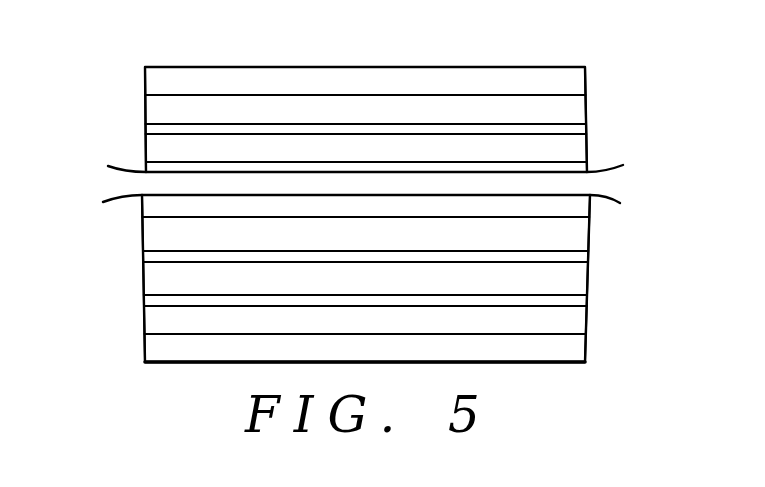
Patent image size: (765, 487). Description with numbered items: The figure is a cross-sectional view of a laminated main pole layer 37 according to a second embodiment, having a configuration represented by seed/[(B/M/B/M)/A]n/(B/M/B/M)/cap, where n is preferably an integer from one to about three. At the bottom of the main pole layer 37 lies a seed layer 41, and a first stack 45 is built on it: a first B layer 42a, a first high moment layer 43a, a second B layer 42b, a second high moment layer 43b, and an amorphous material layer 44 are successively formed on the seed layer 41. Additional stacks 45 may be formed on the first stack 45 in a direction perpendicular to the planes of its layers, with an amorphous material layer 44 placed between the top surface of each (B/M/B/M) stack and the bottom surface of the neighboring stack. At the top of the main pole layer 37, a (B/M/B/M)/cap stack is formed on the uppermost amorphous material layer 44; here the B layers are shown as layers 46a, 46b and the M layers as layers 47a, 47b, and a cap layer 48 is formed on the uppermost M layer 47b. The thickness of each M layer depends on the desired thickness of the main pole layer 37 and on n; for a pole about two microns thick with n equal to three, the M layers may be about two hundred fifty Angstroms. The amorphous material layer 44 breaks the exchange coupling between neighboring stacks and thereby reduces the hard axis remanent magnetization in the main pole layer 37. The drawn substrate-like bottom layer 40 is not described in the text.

The laminated main pole layer 37 is at (361, 101).
The cap layer 48 is at (565, 80).
The M layer 47b is at (565, 108).
The B layer 46b is at (164, 124).
The M layer 47a is at (565, 147).
The B layer 46a is at (163, 167).
The first stack 45 is at (105, 200).
The amorphous material layer 44 is at (568, 207).
The second high moment layer 43b is at (568, 235).
The second B layer 42b is at (568, 258).
The first high moment layer 43a is at (568, 278).
The first B layer 42a is at (570, 302).
The seed layer 41 is at (171, 320).
The substrate 40 is at (572, 345).